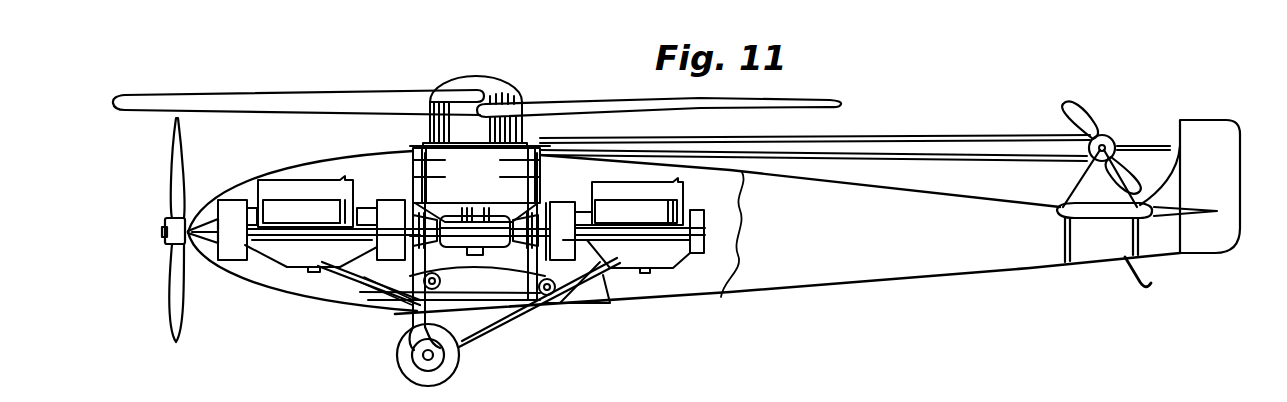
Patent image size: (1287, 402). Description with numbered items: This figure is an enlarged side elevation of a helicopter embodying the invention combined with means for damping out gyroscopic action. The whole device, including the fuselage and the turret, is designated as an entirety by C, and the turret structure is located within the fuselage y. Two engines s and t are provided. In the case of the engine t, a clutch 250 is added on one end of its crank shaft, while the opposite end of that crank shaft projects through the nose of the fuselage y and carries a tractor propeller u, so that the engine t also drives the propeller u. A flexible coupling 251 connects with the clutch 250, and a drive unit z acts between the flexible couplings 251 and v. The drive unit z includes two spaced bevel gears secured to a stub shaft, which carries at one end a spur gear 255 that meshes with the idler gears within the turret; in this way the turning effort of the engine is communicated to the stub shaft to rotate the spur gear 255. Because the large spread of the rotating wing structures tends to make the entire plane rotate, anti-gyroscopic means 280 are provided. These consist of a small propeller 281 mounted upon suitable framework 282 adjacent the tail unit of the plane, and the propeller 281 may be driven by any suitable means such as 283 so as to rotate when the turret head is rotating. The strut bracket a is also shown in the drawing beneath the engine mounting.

The engine t is at (319, 217).
The engine s is at (625, 217).
The flexible coupling v is at (538, 219).
The drive unit z is at (475, 241).
The propeller u is at (178, 318).
The strut bracket a is at (587, 293).
The entire device C is at (694, 261).
The fuselage y is at (753, 295).
The clutch 250 is at (390, 249).
The flexible coupling 251 is at (420, 247).
The driving means 283 is at (900, 136).
The anti-gyroscopic means 280 is at (1114, 135).
The small propeller 281 is at (1077, 115).
The framework 282 is at (1090, 163).
The spur gear 255 is at (978, 398).